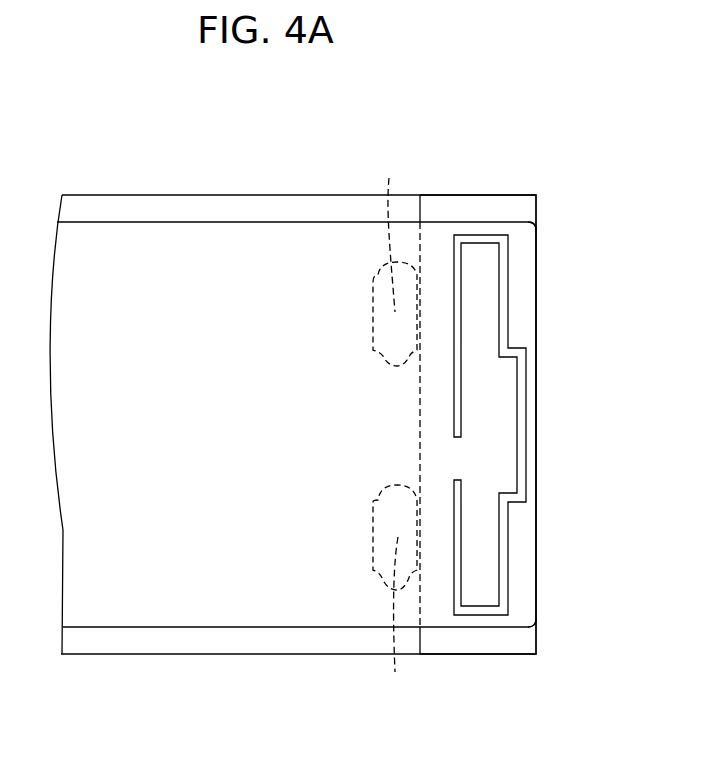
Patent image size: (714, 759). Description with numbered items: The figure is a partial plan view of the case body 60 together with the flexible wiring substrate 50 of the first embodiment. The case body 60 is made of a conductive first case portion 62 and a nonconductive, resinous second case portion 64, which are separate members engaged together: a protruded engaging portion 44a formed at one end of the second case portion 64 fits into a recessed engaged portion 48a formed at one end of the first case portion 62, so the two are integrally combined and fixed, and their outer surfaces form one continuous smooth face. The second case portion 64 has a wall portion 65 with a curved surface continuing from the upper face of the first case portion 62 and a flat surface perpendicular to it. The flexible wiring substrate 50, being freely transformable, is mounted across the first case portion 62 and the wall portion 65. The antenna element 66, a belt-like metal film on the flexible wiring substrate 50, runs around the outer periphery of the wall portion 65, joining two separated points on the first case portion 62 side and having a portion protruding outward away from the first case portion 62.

The case body 60 is at (202, 150).
The flexible wiring substrate 50 is at (170, 608).
The first case portion 62 is at (333, 195).
The second case portion 64 is at (481, 192).
The wall portion 65 is at (525, 248).
The antenna element 66 is at (508, 302).
The protruded engaging portion 44a is at (395, 428).
The recessed engaged portion 48a is at (372, 295).